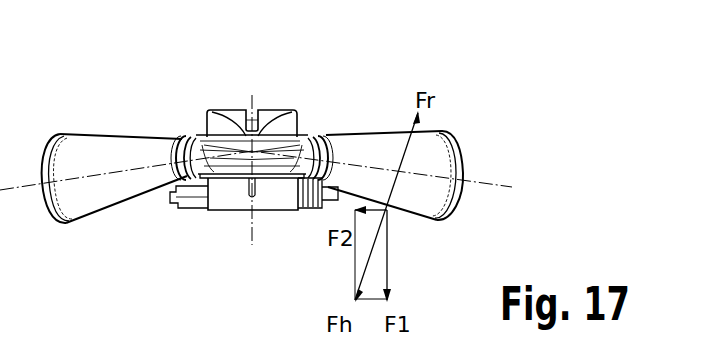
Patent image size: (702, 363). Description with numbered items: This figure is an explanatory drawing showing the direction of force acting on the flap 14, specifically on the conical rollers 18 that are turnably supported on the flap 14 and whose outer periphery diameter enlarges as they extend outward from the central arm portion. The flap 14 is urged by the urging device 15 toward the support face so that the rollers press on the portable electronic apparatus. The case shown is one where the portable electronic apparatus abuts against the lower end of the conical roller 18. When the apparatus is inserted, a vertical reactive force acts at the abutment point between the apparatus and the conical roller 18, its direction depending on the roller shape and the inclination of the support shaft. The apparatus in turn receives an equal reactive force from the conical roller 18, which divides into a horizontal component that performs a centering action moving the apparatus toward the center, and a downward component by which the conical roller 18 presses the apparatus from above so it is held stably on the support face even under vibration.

The flap 14 is at (240, 109).
The urging device 15 is at (298, 208).
The conical roller 18 is at (108, 146).